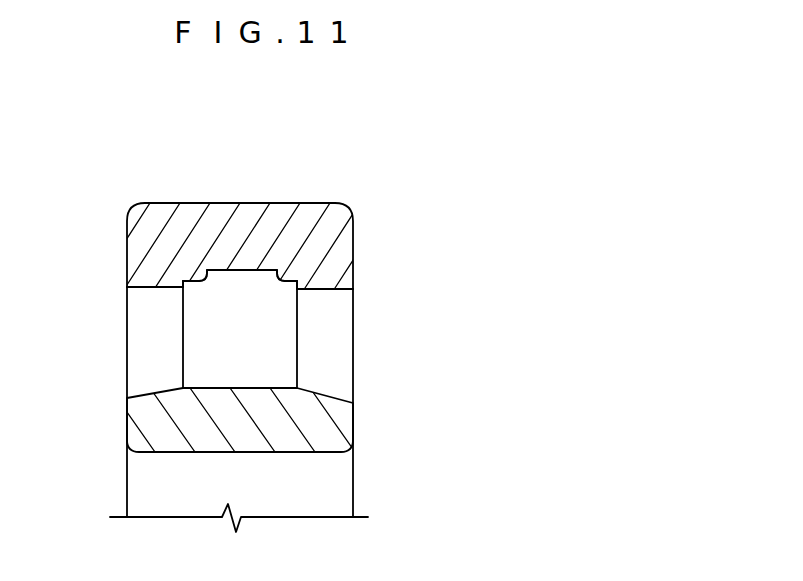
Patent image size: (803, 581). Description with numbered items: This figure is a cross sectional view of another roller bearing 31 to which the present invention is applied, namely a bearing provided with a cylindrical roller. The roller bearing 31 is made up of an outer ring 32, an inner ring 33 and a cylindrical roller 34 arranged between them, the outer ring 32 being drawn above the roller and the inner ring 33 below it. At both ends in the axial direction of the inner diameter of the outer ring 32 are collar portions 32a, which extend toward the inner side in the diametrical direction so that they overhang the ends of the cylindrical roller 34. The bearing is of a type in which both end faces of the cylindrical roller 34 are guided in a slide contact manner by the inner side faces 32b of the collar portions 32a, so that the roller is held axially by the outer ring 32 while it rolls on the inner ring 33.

The roller bearing 31 is at (380, 234).
The outer ring 32 is at (266, 215).
The collar portions 32a is at (160, 277).
The inner side faces 32b is at (207, 270).
The inner ring 33 is at (338, 424).
The cylindrical roller 34 is at (273, 343).